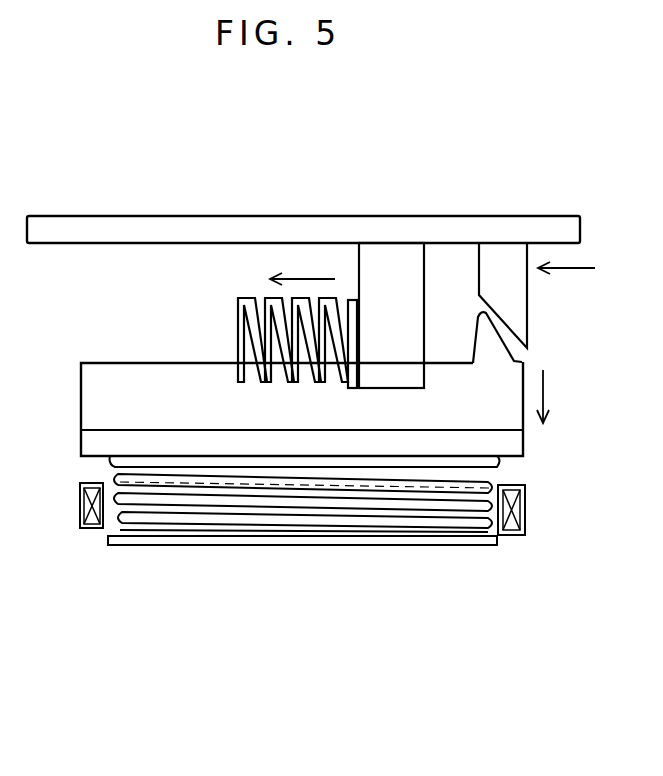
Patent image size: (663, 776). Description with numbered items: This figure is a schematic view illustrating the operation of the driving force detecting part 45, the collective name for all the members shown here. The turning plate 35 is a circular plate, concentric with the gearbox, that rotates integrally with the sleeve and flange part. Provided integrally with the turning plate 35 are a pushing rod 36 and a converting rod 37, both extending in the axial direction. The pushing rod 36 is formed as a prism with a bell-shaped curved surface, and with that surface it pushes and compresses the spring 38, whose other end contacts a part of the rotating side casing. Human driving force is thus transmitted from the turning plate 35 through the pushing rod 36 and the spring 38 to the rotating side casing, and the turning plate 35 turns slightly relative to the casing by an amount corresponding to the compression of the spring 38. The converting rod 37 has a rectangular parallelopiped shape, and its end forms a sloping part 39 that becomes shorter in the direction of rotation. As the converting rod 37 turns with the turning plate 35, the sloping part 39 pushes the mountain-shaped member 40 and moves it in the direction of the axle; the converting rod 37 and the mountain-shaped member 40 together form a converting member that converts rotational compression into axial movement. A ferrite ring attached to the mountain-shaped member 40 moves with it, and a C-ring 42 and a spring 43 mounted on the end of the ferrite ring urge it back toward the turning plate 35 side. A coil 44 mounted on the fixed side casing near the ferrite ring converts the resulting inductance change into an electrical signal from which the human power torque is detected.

The turning plate 35 is at (514, 230).
The pushing rod 36 is at (388, 270).
The converting rod 37 is at (510, 300).
The spring 38 is at (298, 305).
The sloping part 39 is at (513, 334).
The mountain-shaped member 40 is at (497, 408).
The C-ring 42 is at (280, 547).
The spring 43 is at (468, 505).
The coil 44 is at (88, 522).
The driving force detecting part 45 is at (150, 585).